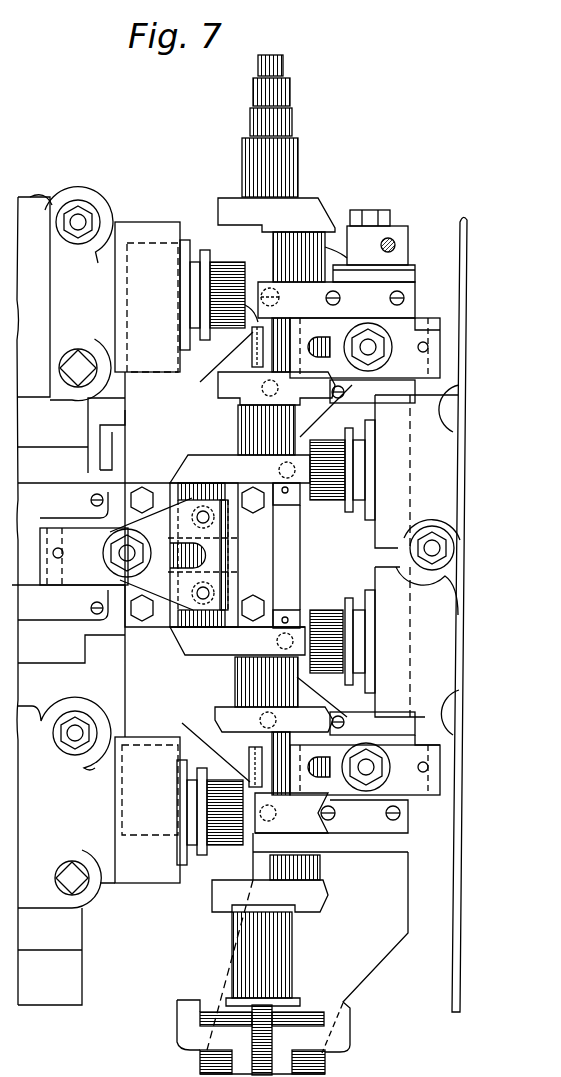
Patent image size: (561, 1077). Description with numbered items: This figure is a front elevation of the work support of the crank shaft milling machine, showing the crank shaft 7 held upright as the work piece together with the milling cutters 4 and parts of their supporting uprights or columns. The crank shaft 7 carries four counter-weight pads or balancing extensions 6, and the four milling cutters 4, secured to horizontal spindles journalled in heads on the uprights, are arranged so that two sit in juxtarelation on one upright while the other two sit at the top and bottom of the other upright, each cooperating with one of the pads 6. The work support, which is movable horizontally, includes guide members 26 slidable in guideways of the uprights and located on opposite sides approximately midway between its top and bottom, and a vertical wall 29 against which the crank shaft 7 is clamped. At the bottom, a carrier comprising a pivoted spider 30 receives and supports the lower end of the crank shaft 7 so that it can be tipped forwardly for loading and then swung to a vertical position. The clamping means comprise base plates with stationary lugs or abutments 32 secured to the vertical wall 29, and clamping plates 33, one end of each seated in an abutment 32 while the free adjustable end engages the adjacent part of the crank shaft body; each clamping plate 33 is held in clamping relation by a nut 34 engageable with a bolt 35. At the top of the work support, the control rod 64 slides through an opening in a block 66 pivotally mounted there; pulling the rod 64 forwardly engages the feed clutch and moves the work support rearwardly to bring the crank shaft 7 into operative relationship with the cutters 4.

The milling cutters 4 is at (228, 270).
The counter-weight pads 6 is at (232, 323).
The crank shaft 7 is at (300, 156).
The guide members 26 is at (90, 520).
The vertical wall 29 is at (215, 524).
The spider 30 is at (349, 1014).
The stationary abutments 32 is at (427, 322).
The clamping plates 33 is at (337, 323).
The nut 34 is at (380, 345).
The bolt 35 is at (378, 350).
The control rod 64 is at (395, 245).
The block 66 is at (400, 225).